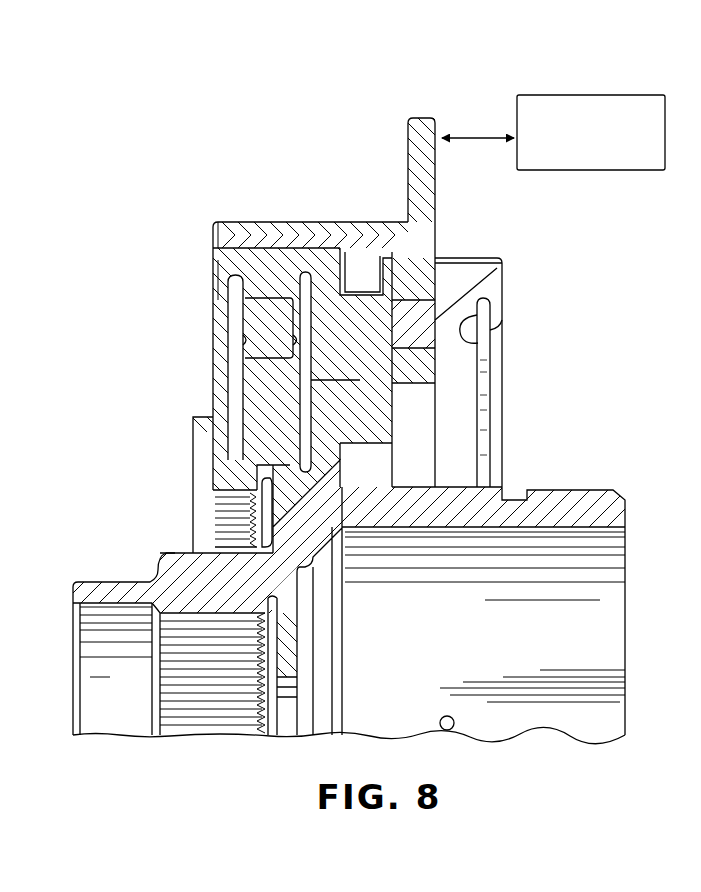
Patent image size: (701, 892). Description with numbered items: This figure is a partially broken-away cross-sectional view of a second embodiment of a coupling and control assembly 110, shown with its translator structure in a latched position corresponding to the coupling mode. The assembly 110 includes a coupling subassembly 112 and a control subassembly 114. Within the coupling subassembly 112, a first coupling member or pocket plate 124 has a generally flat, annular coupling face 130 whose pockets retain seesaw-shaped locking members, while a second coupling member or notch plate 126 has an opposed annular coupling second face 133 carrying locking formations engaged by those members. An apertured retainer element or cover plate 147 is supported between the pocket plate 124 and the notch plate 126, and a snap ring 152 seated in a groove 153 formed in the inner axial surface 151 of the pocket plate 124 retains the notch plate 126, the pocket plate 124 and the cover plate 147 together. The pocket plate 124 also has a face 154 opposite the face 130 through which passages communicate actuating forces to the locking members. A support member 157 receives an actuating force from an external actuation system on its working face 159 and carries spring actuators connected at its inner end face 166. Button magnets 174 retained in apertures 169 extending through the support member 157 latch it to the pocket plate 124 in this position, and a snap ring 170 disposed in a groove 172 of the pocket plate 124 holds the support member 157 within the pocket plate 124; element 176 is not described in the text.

The coupling and control assembly 110 is at (369, 399).
The coupling subassembly 112 is at (239, 176).
The control subassembly 114 is at (446, 217).
The first coupling member 124 is at (263, 243).
The second coupling member 126 is at (186, 422).
The coupling face 130 is at (345, 452).
The coupling second face 133 is at (395, 360).
The retainer element 147 is at (324, 422).
The inner axial surface 151 is at (262, 300).
The snap ring 152 is at (228, 348).
The groove 153 is at (214, 285).
The face 154 is at (395, 388).
The support member 157 is at (441, 126).
The working face 159 is at (440, 256).
The inner end face 166 is at (318, 372).
The apertures 169 is at (402, 250).
The snap ring 170 is at (508, 322).
The groove 172 is at (505, 322).
The button magnets 174 is at (503, 266).
The ring tab 176 is at (480, 341).